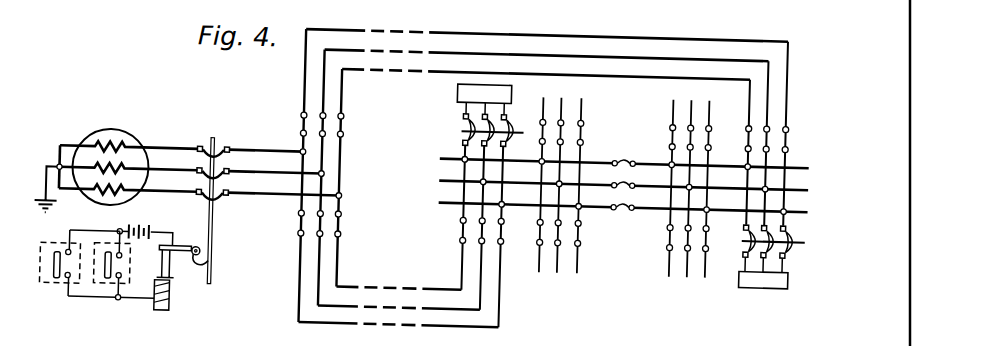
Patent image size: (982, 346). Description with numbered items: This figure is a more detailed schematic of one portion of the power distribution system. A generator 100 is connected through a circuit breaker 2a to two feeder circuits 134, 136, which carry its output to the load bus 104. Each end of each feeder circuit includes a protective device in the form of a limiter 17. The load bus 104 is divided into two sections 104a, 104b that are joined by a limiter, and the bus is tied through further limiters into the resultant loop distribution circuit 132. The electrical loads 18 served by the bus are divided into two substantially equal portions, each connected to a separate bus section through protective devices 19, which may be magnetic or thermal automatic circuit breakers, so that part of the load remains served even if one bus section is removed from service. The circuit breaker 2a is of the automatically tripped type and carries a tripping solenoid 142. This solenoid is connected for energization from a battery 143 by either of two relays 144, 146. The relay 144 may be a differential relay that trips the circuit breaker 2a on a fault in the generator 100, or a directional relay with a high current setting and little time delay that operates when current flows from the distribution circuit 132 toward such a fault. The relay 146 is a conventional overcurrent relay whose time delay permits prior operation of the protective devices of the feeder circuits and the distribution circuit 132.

The generator 100 is at (117, 134).
The circuit breaker 2a is at (212, 200).
The feeder circuit 134 is at (574, 29).
The feeder circuit 136 is at (462, 284).
The load bus 104 is at (447, 175).
The load bus section 104a is at (448, 200).
The load bus section 104b is at (654, 153).
The loop distribution circuit 132 is at (639, 283).
The limiter 17 is at (581, 231).
The electrical load 18 is at (456, 89).
The protective device 19 is at (461, 125).
The battery 143 is at (150, 232).
The tripping solenoid 142 is at (174, 297).
The relay 144 is at (55, 289).
The relay 146 is at (107, 288).